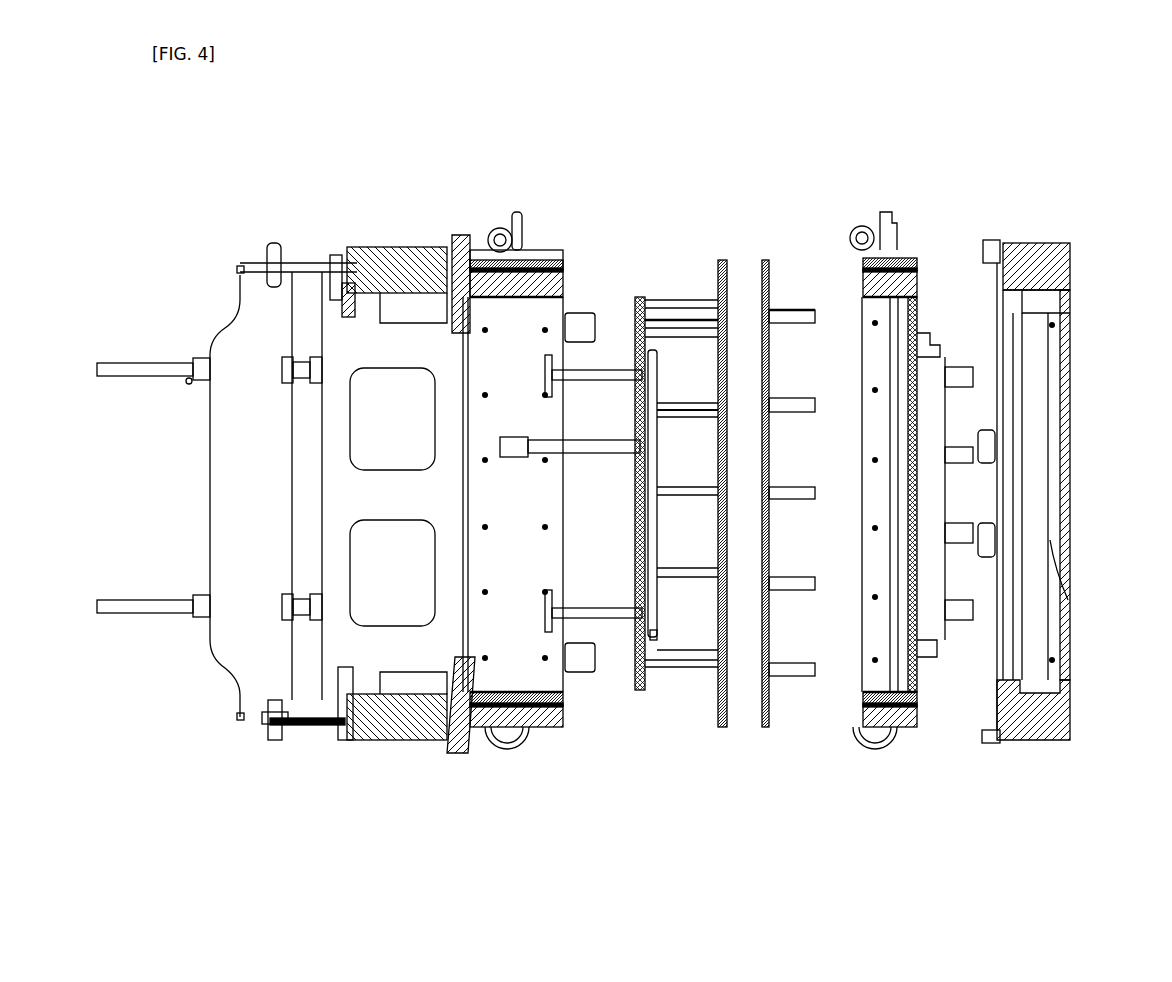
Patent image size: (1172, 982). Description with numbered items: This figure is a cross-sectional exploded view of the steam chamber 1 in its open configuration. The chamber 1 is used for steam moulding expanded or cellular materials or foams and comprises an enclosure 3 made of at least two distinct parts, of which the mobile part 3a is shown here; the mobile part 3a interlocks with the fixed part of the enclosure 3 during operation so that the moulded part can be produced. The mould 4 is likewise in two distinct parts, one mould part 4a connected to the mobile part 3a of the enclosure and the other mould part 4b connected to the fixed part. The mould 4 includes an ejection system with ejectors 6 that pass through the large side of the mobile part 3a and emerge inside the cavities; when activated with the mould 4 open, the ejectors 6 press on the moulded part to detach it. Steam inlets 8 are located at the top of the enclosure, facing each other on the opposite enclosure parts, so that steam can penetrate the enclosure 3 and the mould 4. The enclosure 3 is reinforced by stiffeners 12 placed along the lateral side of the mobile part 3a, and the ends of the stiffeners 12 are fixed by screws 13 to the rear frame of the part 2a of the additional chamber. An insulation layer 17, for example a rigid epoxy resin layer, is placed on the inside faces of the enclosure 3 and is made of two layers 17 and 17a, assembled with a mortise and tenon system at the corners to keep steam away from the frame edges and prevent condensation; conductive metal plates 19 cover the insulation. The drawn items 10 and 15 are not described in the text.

The chamber 1 is at (226, 217).
The part of the additional chamber 2a is at (240, 755).
The enclosure 3 is at (540, 728).
The mobile part of the enclosure 3a is at (548, 240).
The mould 4 is at (750, 422).
The mould part 4a is at (720, 260).
The mould part 4b is at (768, 260).
The ejector 6 is at (578, 370).
The steam inlet 8 is at (490, 232).
The wheel 10 is at (510, 748).
The stiffener 12 is at (322, 333).
The screw 13 is at (330, 310).
The connecting rod 15 is at (895, 618).
The insulation layer 17 is at (636, 297).
The insulation layer 17a is at (522, 268).
The conductive metal plate 19 is at (505, 262).